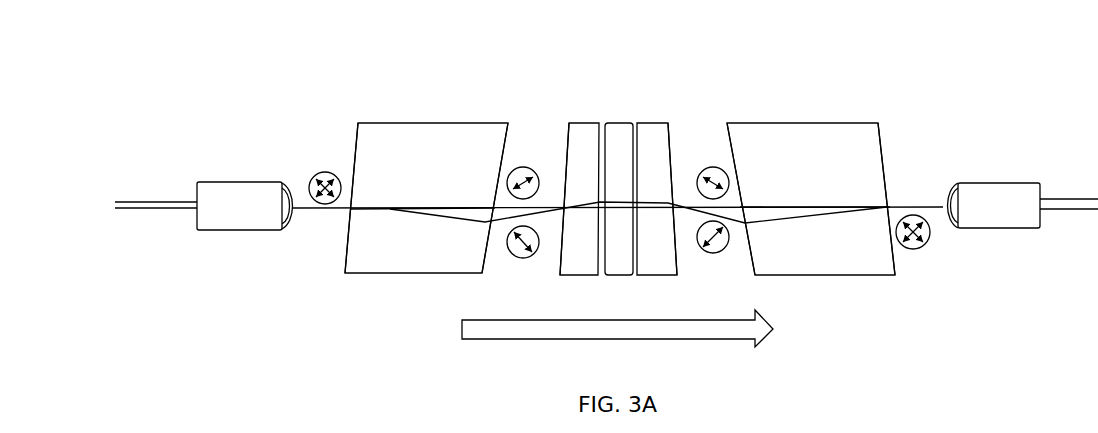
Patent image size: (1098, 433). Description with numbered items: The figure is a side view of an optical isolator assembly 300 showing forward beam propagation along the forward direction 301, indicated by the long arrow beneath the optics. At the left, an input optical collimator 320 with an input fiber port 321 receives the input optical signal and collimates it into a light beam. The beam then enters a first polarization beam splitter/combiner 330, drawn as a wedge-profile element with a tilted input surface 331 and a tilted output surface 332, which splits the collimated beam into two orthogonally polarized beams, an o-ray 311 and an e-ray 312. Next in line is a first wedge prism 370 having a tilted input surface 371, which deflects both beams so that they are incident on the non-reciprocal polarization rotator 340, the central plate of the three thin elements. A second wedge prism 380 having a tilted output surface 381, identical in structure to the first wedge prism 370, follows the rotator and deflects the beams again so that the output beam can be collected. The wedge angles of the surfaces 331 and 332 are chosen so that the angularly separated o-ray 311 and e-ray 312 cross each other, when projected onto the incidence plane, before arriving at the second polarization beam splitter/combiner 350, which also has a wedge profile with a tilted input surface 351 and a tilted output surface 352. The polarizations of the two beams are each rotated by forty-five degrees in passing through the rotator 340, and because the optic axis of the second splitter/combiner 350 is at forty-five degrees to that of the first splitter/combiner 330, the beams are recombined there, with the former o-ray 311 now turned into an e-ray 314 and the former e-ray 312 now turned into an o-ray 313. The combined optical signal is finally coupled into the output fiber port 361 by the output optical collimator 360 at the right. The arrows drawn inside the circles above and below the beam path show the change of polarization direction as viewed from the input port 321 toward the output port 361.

The optical isolator assembly 300 is at (992, 60).
The forward direction 301 is at (522, 342).
The o-ray 311 is at (427, 205).
The e-ray 312 is at (424, 221).
The o-ray 313 is at (790, 204).
The e-ray 314 is at (796, 225).
The input optical collimator 320 is at (238, 213).
The input fiber port 321 is at (178, 199).
The first polarization beam splitter/combiner 330 is at (424, 256).
The tilted input surface 331 is at (355, 141).
The tilted output surface 332 is at (512, 141).
The non-reciprocal polarization rotator 340 is at (617, 260).
The second polarization beam splitter/combiner 350 is at (838, 264).
The tilted input surface 351 is at (727, 141).
The tilted output surface 352 is at (881, 141).
The output optical collimator 360 is at (997, 211).
The output fiber port 361 is at (1075, 196).
The first wedge prism 370 is at (581, 260).
The tilted input surface 371 is at (566, 141).
The second wedge prism 380 is at (658, 260).
The tilted output surface 381 is at (670, 141).